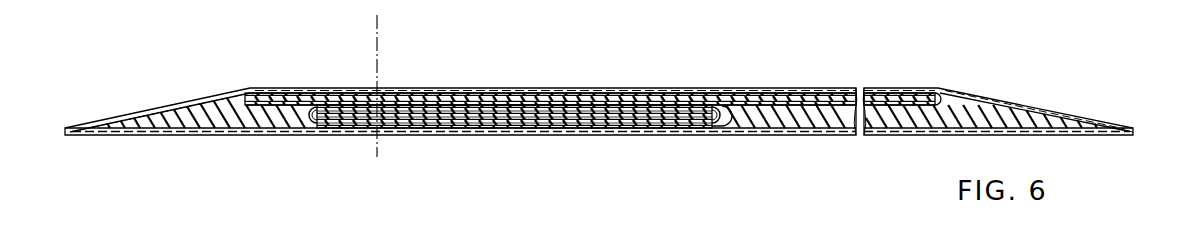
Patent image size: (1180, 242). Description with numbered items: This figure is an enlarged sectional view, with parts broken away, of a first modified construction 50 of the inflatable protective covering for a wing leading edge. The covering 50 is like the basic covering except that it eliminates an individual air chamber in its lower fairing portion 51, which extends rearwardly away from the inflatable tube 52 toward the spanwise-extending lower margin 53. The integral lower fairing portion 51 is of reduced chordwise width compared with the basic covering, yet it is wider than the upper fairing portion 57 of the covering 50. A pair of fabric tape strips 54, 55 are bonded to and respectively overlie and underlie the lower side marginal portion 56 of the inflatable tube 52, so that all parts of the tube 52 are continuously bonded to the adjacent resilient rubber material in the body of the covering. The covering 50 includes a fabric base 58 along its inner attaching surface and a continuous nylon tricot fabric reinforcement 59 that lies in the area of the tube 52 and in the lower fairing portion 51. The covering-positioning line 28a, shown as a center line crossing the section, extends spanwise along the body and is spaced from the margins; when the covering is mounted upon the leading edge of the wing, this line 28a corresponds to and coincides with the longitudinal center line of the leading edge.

The covering-positioning line 28a is at (378, 57).
The first modified construction of the inflatable covering 50 is at (925, 78).
The lower fairing portion 51 is at (928, 118).
The inflatable tube 52 is at (618, 112).
The spanwise-extending lower margin 53 is at (1131, 131).
The fabric tape strip 54 is at (738, 115).
The fabric tape strip 55 is at (736, 123).
The lower side marginal portion 56 is at (712, 121).
The upper fairing portion 57 is at (228, 103).
The fabric base 58 is at (200, 137).
The nylon tricot fabric reinforcement 59 is at (797, 102).